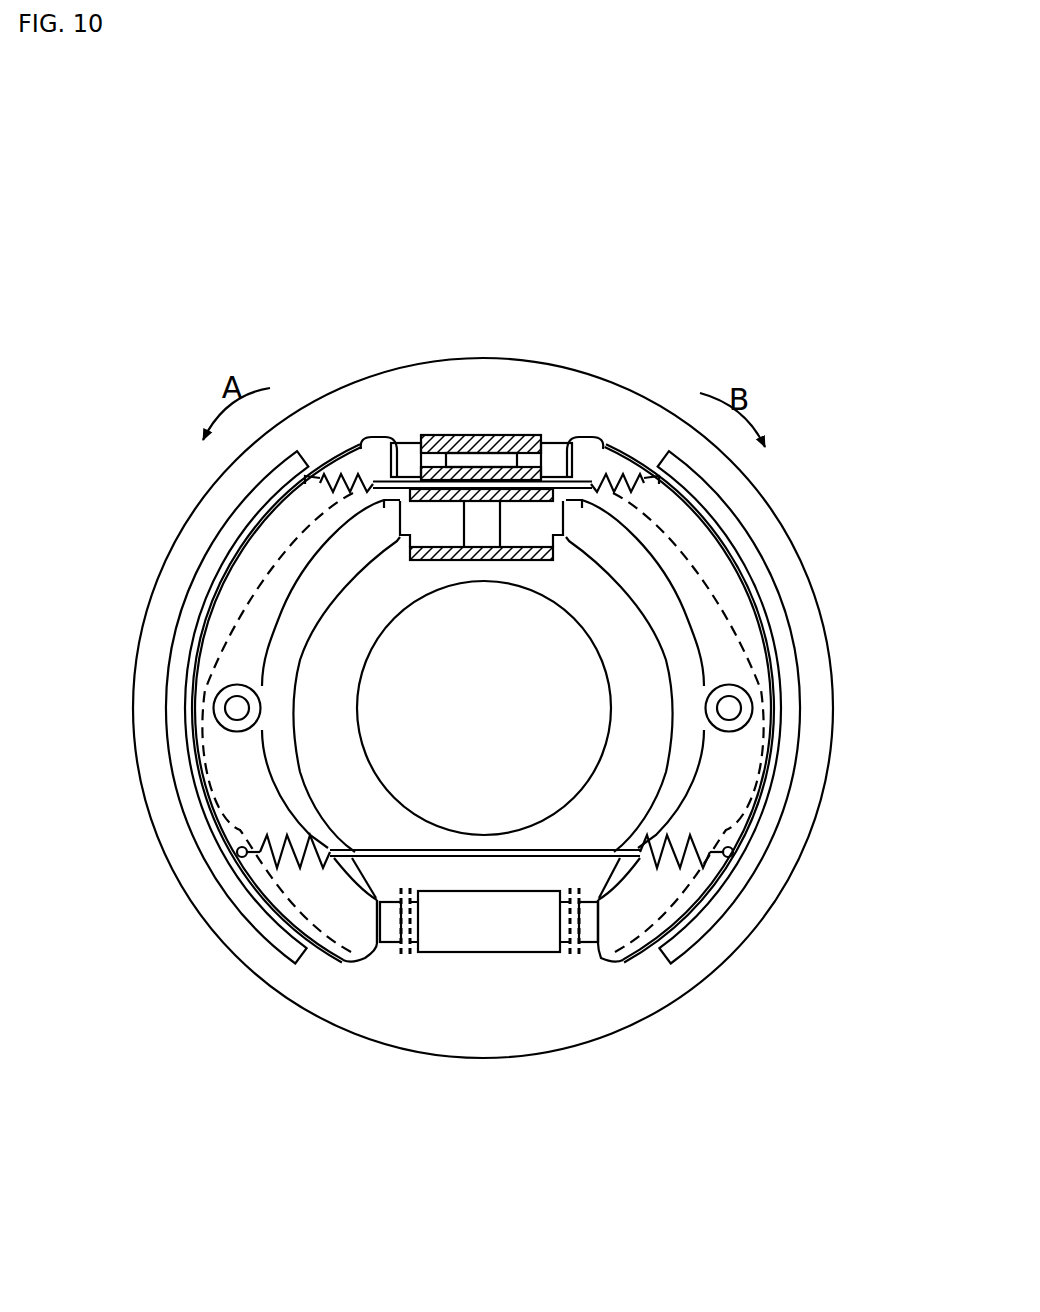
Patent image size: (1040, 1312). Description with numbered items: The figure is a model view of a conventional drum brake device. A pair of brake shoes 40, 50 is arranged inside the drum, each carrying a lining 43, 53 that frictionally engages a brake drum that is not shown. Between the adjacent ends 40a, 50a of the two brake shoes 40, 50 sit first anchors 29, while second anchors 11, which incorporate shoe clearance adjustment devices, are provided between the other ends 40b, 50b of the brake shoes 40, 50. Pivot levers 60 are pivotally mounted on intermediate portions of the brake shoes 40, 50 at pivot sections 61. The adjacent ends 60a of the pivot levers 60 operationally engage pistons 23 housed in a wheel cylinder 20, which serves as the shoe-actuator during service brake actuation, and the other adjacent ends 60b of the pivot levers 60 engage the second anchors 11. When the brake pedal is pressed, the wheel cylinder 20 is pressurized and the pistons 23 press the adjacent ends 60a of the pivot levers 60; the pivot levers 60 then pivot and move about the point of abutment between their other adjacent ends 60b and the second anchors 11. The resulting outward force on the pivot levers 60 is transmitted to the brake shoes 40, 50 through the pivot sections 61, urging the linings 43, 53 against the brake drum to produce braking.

The second anchor 11 is at (414, 968).
The wheel cylinder 20 is at (482, 478).
The piston 23 is at (432, 510).
The first anchor 29 is at (404, 445).
The brake shoe 40 is at (252, 699).
The adjacent end of brake shoe 40a is at (372, 438).
The other end of brake shoe 40b is at (358, 938).
The lining 43 is at (183, 797).
The brake shoe 50 is at (716, 699).
The adjacent end of brake shoe 50a is at (592, 438).
The other end of brake shoe 50b is at (617, 938).
The lining 53 is at (777, 807).
The pivot lever 60 is at (483, 721).
The adjacent end of pivot lever 60a is at (388, 540).
The other adjacent end of pivot lever 60b is at (368, 886).
The pivot section 61 is at (262, 702).